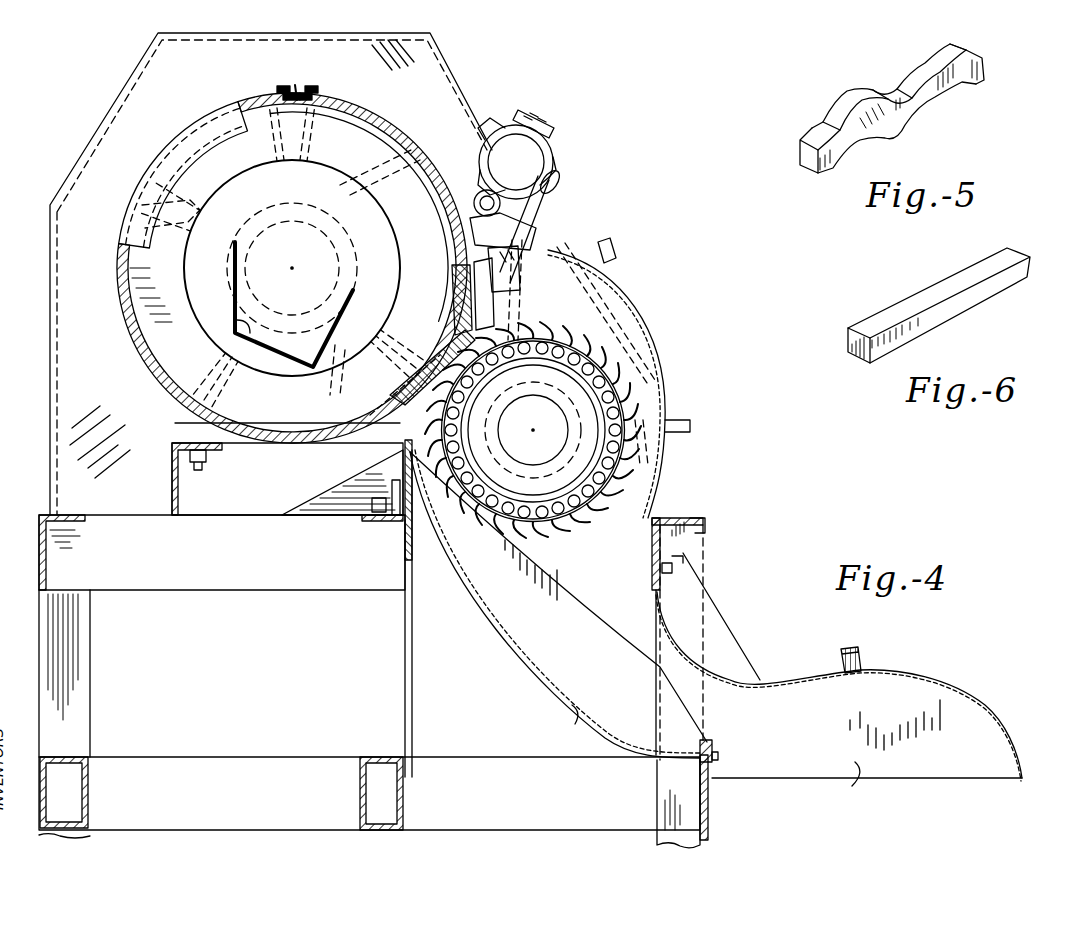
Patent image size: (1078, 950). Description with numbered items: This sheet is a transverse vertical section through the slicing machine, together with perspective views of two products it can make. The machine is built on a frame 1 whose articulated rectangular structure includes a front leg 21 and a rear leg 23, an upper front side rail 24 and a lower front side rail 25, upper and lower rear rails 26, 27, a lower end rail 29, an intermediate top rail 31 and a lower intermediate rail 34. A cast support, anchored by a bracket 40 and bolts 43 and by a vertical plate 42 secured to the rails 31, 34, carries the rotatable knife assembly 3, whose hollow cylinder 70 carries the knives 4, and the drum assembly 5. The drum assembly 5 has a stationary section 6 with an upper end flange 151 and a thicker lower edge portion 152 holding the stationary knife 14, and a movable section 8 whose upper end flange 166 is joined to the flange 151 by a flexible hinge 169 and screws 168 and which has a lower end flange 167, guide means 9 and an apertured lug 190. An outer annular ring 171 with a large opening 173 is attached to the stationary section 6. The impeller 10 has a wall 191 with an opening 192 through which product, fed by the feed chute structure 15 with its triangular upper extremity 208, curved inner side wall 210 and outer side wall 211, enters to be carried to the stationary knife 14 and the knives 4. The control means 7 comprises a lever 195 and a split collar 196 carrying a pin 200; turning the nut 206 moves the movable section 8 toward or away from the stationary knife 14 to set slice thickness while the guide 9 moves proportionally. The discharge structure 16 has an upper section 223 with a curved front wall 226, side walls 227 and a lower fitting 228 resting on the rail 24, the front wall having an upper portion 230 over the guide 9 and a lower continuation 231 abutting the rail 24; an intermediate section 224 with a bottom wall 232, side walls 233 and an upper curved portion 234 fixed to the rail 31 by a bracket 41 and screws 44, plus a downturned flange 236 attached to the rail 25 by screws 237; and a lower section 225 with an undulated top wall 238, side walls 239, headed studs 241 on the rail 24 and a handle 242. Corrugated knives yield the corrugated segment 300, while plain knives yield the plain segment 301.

In FIG. 4, the frame 1 is at (26, 511).
In FIG. 4, the rotatable knife assembly 3 is at (652, 376).
In FIG. 4, the knives 4 is at (596, 336).
In FIG. 4, the drum assembly 5 is at (170, 124).
In FIG. 4, the stationary section 6 is at (118, 296).
In FIG. 4, the control means 7 is at (558, 108).
In FIG. 4, the movable section 8 is at (372, 120).
In FIG. 4, the guide means 9 is at (500, 316).
In FIG. 4, the impeller 10 is at (272, 165).
In FIG. 4, the stationary knife 14 is at (465, 302).
In FIG. 4, the feed chute structure 15 is at (232, 250).
In FIG. 4, the discharge chute structure 16 is at (730, 613).
In FIG. 4, the front leg 21 is at (708, 838).
In FIG. 4, the rear leg 23 is at (82, 722).
In FIG. 4, the upper front side rail 24 is at (705, 536).
In FIG. 4, the lower front side rail 25 is at (708, 808).
In FIG. 4, the upper rear rail 26 is at (38, 534).
In FIG. 4, the lower rear rail 27 is at (88, 806).
In FIG. 4, the lower end rail 29 is at (262, 760).
In FIG. 4, the intermediate top rail 31 is at (402, 563).
In FIG. 4, the lower intermediate rail 34 is at (360, 792).
In FIG. 4, the bracket 40 is at (175, 488).
In FIG. 4, the bracket 41 is at (396, 525).
In FIG. 4, the vertical plate 42 is at (402, 623).
In FIG. 4, the bolts 43 is at (198, 463).
In FIG. 4, the screws 44 is at (392, 490).
In FIG. 4, the hollow cylinder 70 is at (582, 490).
In FIG. 4, the upper end flange 151 is at (282, 96).
In FIG. 4, the lower edge portion 152 is at (455, 335).
In FIG. 4, the upper end flange 166 is at (312, 97).
In FIG. 4, the lower end flange 167 is at (486, 256).
In FIG. 4, the screws 168 is at (312, 82).
In FIG. 4, the hinge 169 is at (295, 84).
In FIG. 4, the outer annular ring 171 is at (175, 160).
In FIG. 4, the opening 173 is at (212, 148).
In FIG. 4, the apertured lug 190 is at (473, 200).
In FIG. 4, the wall 191 is at (150, 333).
In FIG. 4, the opening 192 is at (190, 262).
In FIG. 4, the lever 195 is at (555, 198).
In FIG. 4, the split collar 196 is at (556, 145).
In FIG. 4, the pin 200 is at (560, 183).
In FIG. 4, the nut 206 is at (540, 108).
In FIG. 4, the upper extremity 208 is at (237, 320).
In FIG. 4, the curved inner side wall 210 is at (345, 304).
In FIG. 4, the outer side wall 211 is at (233, 290).
In FIG. 4, the upper section 223 is at (668, 395).
In FIG. 4, the intermediate section 224 is at (485, 598).
In FIG. 4, the lower section 225 is at (990, 705).
In FIG. 4, the curved front wall 226 is at (640, 325).
In FIG. 4, the side walls 227 is at (610, 290).
In FIG. 4, the lower fitting 228 is at (655, 505).
In FIG. 4, the upper portion 230 is at (540, 230).
In FIG. 4, the lower continuation 231 is at (655, 548).
In FIG. 4, the bottom wall 232 is at (540, 677).
In FIG. 4, the side walls 233 is at (572, 712).
In FIG. 4, the upper curved portion 234 is at (425, 382).
In FIG. 4, the downturned flange 236 is at (712, 745).
In FIG. 4, the screws 237 is at (712, 758).
In FIG. 4, the undulated top wall 238 is at (935, 668).
In FIG. 4, the side walls 239 is at (852, 786).
In FIG. 4, the headed studs 241 is at (673, 568).
In FIG. 4, the handle 242 is at (860, 650).
In FIG. 5, the segment 300 is at (940, 96).
In FIG. 6, the segment 301 is at (975, 302).